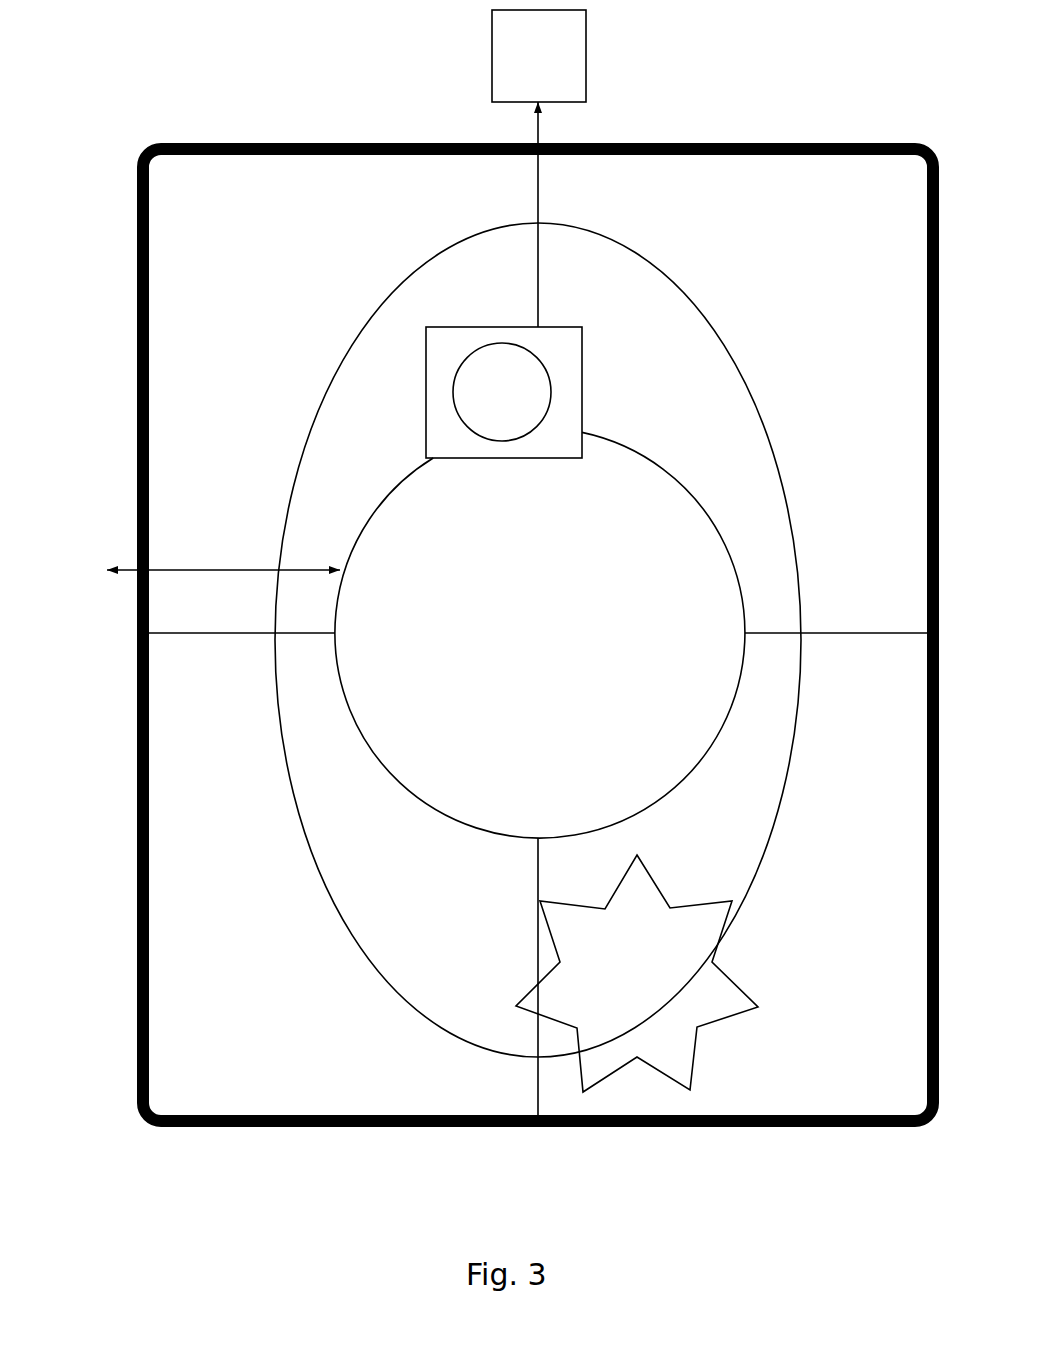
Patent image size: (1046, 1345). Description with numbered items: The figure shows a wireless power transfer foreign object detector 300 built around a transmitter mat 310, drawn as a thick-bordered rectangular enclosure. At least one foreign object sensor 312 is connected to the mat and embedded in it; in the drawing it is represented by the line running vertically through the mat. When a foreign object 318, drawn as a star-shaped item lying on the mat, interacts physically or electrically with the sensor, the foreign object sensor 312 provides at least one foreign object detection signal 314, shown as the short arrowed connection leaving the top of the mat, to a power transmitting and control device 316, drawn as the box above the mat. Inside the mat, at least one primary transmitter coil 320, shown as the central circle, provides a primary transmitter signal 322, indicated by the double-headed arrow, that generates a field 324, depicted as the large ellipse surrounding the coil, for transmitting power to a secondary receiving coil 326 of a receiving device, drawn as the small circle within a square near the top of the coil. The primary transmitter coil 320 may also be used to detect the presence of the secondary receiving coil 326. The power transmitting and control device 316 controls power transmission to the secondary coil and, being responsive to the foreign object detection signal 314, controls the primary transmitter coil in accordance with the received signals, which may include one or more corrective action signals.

The wireless power transfer foreign object detector 300 is at (823, 104).
The transmitter mat 310 is at (875, 1128).
The foreign object sensor 312 is at (538, 1092).
The foreign object detection signal 314 is at (538, 122).
The power transmitting and control device 316 is at (492, 60).
The foreign object 318 is at (516, 1006).
The primary transmitter coil 320 is at (357, 742).
The primary transmitter signal 322 is at (198, 570).
The field 324 is at (365, 324).
The secondary receiving coil 326 is at (453, 393).